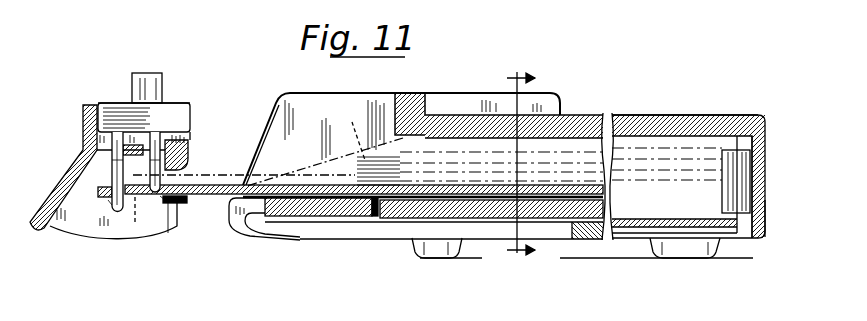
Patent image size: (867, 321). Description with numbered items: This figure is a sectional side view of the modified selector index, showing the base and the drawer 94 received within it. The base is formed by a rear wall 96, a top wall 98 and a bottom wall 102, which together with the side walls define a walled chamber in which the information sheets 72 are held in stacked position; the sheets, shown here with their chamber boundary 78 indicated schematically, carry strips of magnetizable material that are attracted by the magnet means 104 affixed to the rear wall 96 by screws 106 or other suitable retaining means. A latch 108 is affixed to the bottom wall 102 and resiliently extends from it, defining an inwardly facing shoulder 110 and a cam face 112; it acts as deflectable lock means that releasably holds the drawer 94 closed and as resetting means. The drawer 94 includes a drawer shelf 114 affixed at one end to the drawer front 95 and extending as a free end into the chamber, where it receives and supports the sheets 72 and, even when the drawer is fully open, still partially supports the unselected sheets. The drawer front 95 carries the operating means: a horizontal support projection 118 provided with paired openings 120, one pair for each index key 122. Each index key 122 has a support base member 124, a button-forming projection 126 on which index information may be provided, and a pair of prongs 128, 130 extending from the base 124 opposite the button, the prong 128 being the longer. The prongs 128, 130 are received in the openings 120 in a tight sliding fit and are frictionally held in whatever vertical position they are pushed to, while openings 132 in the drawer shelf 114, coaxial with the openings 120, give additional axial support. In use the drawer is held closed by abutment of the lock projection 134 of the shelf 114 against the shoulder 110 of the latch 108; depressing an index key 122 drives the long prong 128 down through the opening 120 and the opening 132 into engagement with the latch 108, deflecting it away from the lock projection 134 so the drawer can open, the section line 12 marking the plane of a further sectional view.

The section line 12- 12 is at (509, 171).
The information sheets 72 is at (518, 150).
The chamber boundary 78 is at (244, 171).
The drawer 94 is at (57, 170).
The drawer front 95 is at (65, 228).
The rear wall 96 is at (766, 140).
The top wall 98 is at (643, 115).
The bottom wall 102 is at (457, 210).
The magnet means 104 is at (733, 150).
The screws 106 is at (766, 203).
The latch 108 is at (330, 210).
The shoulder 110 is at (375, 208).
The cam face 112 is at (260, 204).
The drawer shelf 114 is at (213, 184).
The horizontal support projection 118 is at (200, 147).
The openings 120 is at (150, 150).
The index key 122 is at (102, 98).
The support base member 124 is at (125, 112).
The projection 126 is at (158, 76).
The prong 128 is at (118, 212).
The prong 130 is at (153, 198).
The openings 132 is at (110, 203).
The lock projection 134 is at (188, 202).